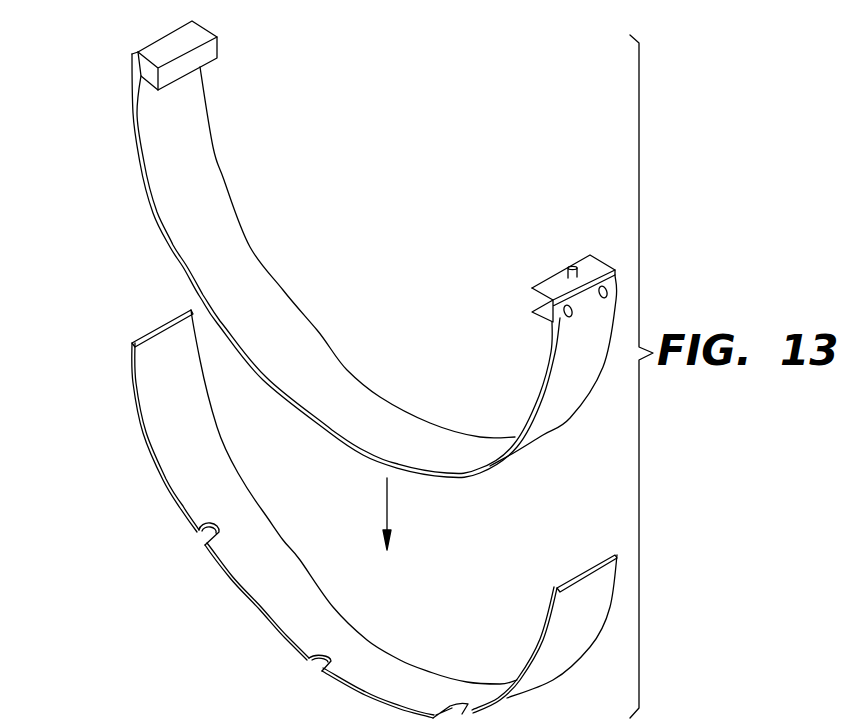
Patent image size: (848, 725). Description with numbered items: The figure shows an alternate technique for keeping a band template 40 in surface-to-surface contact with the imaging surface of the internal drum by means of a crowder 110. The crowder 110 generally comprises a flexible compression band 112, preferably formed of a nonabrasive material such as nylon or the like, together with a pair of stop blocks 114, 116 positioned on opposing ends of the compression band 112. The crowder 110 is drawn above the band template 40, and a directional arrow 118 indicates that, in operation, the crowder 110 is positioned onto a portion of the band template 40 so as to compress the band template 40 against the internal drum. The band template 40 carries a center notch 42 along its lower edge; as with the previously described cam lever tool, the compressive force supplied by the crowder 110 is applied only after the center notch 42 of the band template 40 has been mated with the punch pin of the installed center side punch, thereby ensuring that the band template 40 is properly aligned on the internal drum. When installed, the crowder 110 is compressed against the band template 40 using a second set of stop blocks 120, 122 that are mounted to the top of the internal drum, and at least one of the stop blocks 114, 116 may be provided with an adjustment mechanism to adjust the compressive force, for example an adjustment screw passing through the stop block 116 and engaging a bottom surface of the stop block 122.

The crowder 110 is at (112, 199).
The compression band 112 is at (338, 390).
The stop block 114 is at (205, 53).
The stop block 116 is at (550, 293).
The directional arrow 118 is at (388, 513).
The stop block 120 is at (374, 517).
The band template 40 is at (293, 577).
The center notch 42 is at (313, 663).
The stop block 122 is at (678, 380).